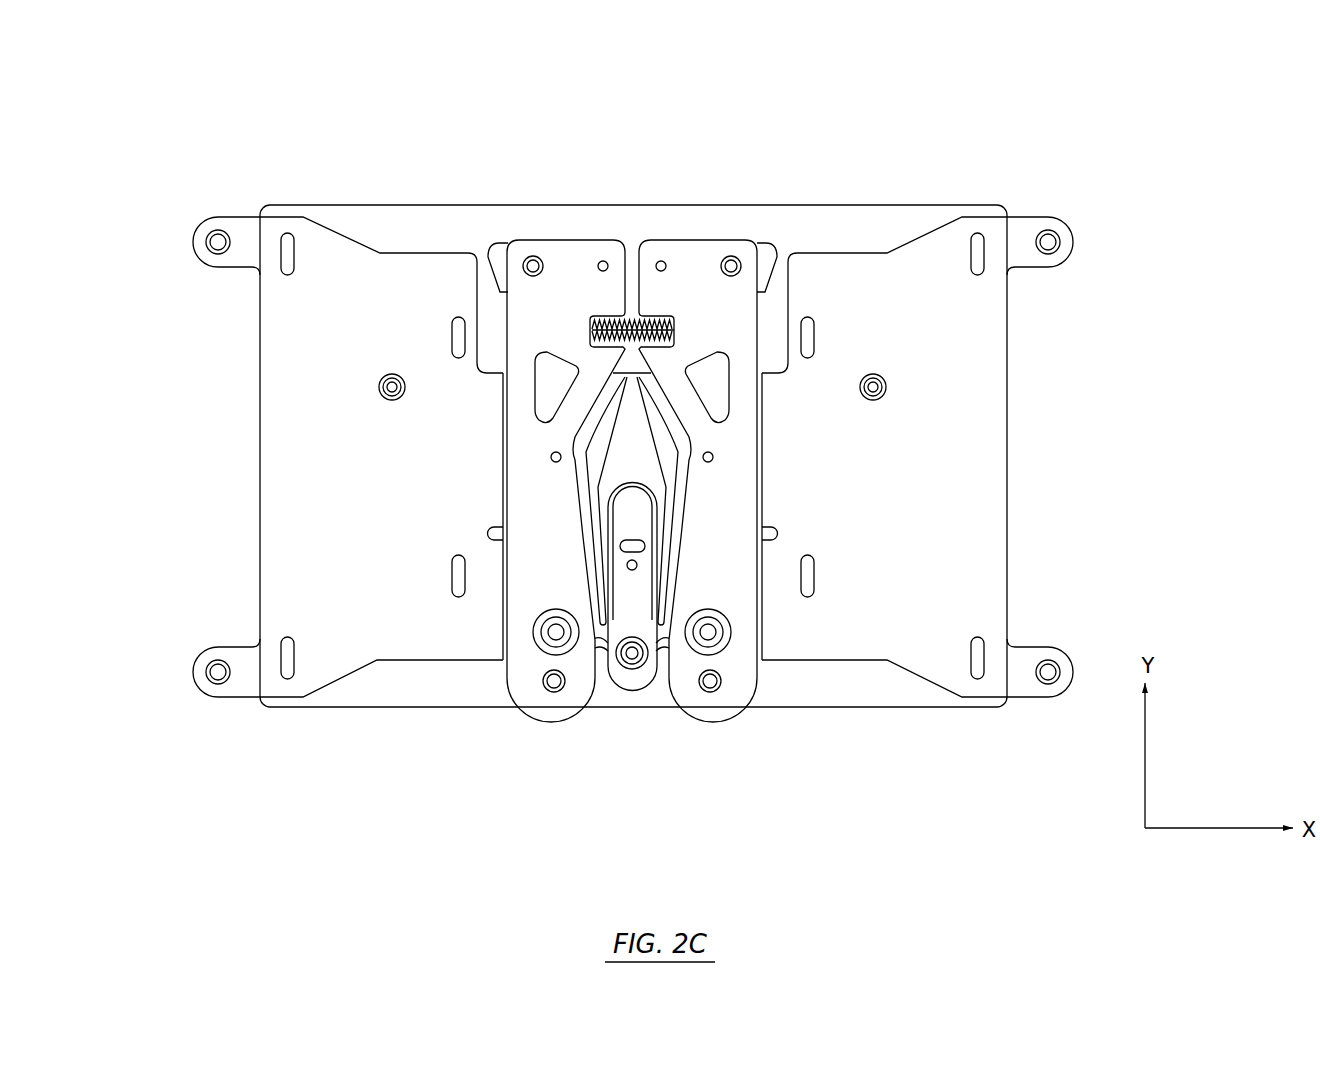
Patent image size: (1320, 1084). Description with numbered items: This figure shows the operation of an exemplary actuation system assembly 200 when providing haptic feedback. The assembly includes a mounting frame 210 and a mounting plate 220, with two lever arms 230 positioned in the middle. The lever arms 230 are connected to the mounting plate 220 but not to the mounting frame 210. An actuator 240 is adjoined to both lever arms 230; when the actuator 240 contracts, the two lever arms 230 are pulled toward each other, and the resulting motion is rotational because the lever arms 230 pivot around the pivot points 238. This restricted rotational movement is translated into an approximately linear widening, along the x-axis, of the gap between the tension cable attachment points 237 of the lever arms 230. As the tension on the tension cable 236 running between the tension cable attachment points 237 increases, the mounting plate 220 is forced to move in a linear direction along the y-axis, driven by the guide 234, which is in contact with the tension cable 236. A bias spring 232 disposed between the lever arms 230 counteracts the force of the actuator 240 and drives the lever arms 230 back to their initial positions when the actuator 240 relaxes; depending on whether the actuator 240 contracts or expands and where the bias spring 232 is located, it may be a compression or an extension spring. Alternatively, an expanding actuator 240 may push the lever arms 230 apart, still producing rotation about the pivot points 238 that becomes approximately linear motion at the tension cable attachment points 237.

The actuation system assembly 200 is at (243, 195).
The mounting frame 210 is at (302, 480).
The mounting plate 220 is at (418, 690).
The lever arms 230 is at (707, 260).
The bias spring 232 is at (597, 320).
The guide 234 is at (635, 670).
The tension cable 236 is at (664, 652).
The tension cable attachment points 237 is at (547, 690).
The pivot points 238 is at (557, 632).
The actuator 240 is at (915, 132).